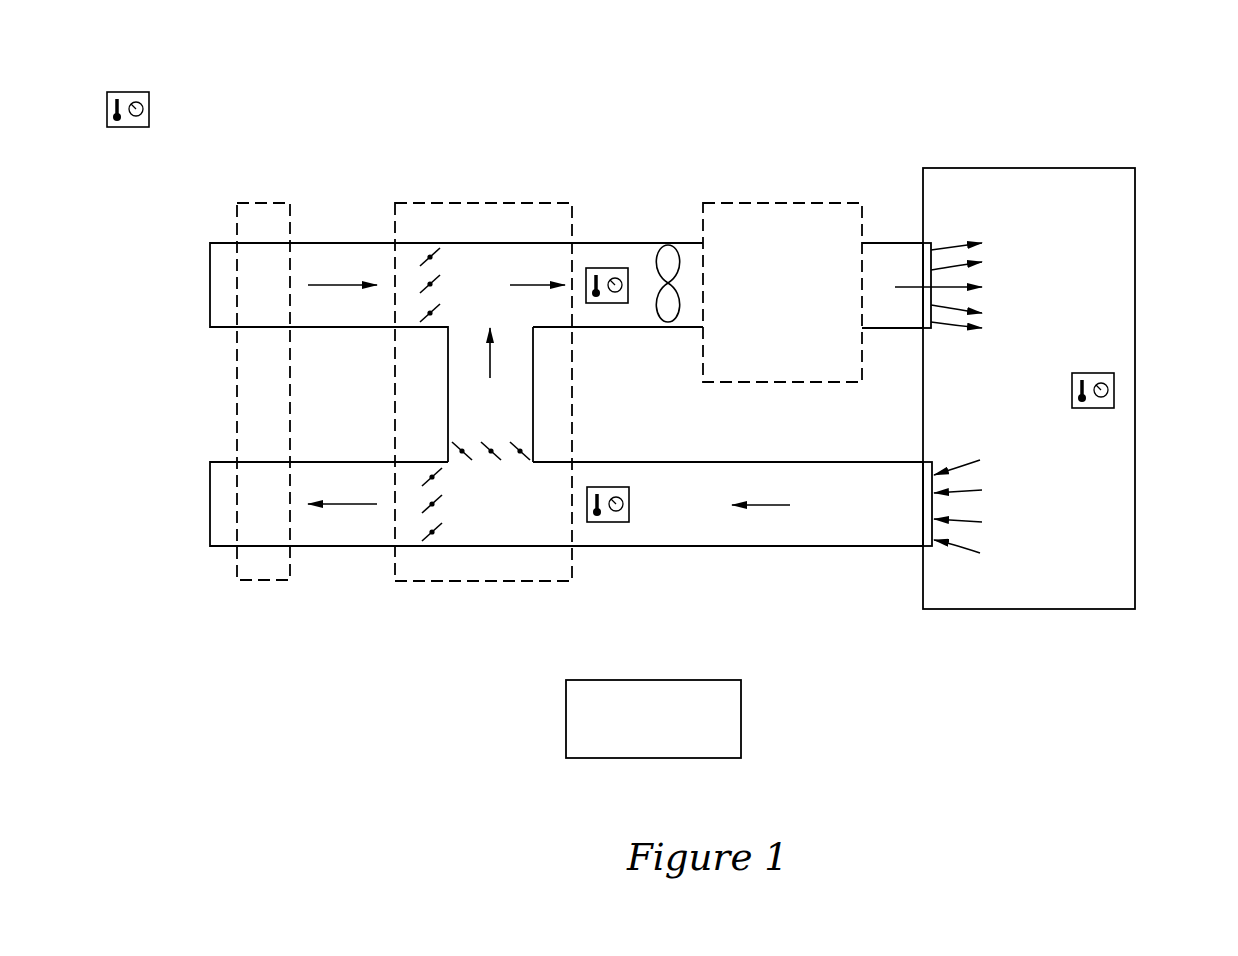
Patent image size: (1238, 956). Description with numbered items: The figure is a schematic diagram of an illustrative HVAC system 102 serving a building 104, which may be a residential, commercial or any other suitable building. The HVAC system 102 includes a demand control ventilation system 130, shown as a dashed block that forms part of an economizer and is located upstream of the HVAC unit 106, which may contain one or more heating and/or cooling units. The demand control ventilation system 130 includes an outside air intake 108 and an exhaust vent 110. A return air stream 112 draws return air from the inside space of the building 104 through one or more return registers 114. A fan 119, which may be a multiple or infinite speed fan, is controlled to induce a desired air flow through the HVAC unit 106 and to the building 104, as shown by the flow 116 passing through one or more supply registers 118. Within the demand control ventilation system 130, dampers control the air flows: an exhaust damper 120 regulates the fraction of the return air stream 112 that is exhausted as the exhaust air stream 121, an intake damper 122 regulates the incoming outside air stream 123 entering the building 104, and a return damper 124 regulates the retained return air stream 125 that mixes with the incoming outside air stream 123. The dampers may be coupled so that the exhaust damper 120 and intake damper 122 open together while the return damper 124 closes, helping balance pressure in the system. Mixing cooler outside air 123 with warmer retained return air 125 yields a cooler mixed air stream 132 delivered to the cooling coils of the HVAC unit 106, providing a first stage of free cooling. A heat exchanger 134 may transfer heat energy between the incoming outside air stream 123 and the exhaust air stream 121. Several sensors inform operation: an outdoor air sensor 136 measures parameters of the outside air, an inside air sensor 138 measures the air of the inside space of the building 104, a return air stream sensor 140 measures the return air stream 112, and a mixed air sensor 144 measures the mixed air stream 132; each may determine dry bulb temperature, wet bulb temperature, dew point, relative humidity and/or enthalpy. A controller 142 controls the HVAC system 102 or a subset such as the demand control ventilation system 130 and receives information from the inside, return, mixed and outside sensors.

The HVAC system 102 is at (742, 86).
The building 104 is at (1137, 210).
The HVAC unit 106 is at (780, 203).
The outside air intake 108 is at (210, 283).
The exhaust vent 110 is at (210, 503).
The return air stream 112 is at (768, 507).
The return register 114 is at (933, 545).
The air flow to the building 116 is at (907, 287).
The supply register 118 is at (933, 247).
The fan 119 is at (670, 281).
The exhaust damper 120 is at (432, 504).
The exhaust air stream 121 is at (355, 504).
The intake damper 122 is at (428, 284).
The incoming outside air stream 123 is at (328, 285).
The return damper 124 is at (491, 451).
The retained return air stream 125 is at (490, 368).
The demand control ventilation system 130 is at (484, 203).
The mixed air stream 132 is at (527, 285).
The heat exchanger 134 is at (262, 203).
The outdoor air sensor 136 is at (131, 92).
The inside air sensor 138 is at (1113, 382).
The return air stream sensor 140 is at (607, 523).
The controller 142 is at (741, 720).
The mixed air sensor 144 is at (607, 268).